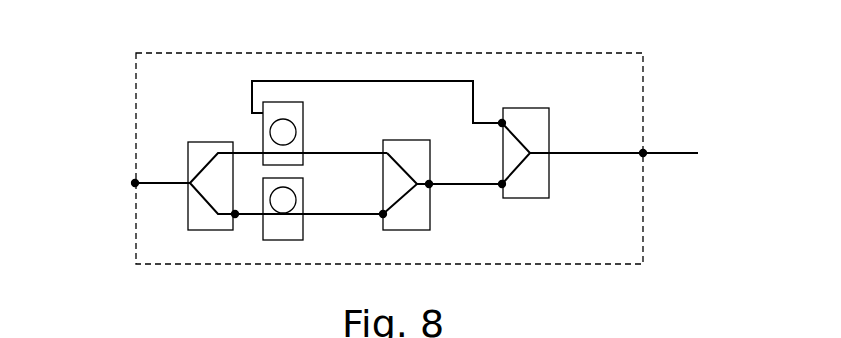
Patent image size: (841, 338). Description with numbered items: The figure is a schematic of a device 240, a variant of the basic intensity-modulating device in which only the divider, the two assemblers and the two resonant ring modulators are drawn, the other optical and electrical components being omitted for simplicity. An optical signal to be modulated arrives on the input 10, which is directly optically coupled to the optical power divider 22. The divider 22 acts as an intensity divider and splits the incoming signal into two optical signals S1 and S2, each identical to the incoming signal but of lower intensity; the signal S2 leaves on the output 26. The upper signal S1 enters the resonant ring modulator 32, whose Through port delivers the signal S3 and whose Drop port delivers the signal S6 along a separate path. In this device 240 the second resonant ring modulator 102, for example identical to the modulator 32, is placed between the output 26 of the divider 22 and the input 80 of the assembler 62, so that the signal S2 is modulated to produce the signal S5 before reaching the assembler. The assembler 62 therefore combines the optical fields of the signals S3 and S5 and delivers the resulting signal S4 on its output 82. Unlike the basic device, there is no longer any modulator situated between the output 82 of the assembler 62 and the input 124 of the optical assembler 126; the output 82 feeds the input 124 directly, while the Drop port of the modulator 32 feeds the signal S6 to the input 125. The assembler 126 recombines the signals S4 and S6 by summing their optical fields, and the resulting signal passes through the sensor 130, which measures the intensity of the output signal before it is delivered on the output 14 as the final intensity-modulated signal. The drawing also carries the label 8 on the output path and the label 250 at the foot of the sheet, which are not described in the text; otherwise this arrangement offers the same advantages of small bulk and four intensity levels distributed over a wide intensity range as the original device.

The output waveguide 8 is at (673, 152).
The input 10 is at (135, 183).
The output 14 is at (646, 156).
The optical power divider 22 is at (208, 222).
The output 26 is at (237, 212).
The resonant ring modulator 32 is at (305, 119).
The assembler 62 is at (430, 236).
The input 80 is at (383, 229).
The output 82 is at (430, 182).
The resonant ring modulator 102 is at (283, 245).
The input 124 is at (505, 184).
The input 125 is at (502, 121).
The optical assembler 126 is at (537, 105).
The sensor 130 is at (526, 203).
The device 240 is at (632, 50).
The device 250 is at (662, 330).
The optical signal to be modulated S1 is at (247, 152).
The optical signal to be modulated S2 is at (248, 217).
The optical signal S3 is at (368, 153).
The optical signal S4 is at (468, 183).
The optical signal S5 is at (342, 216).
The optical signal S6 is at (335, 81).